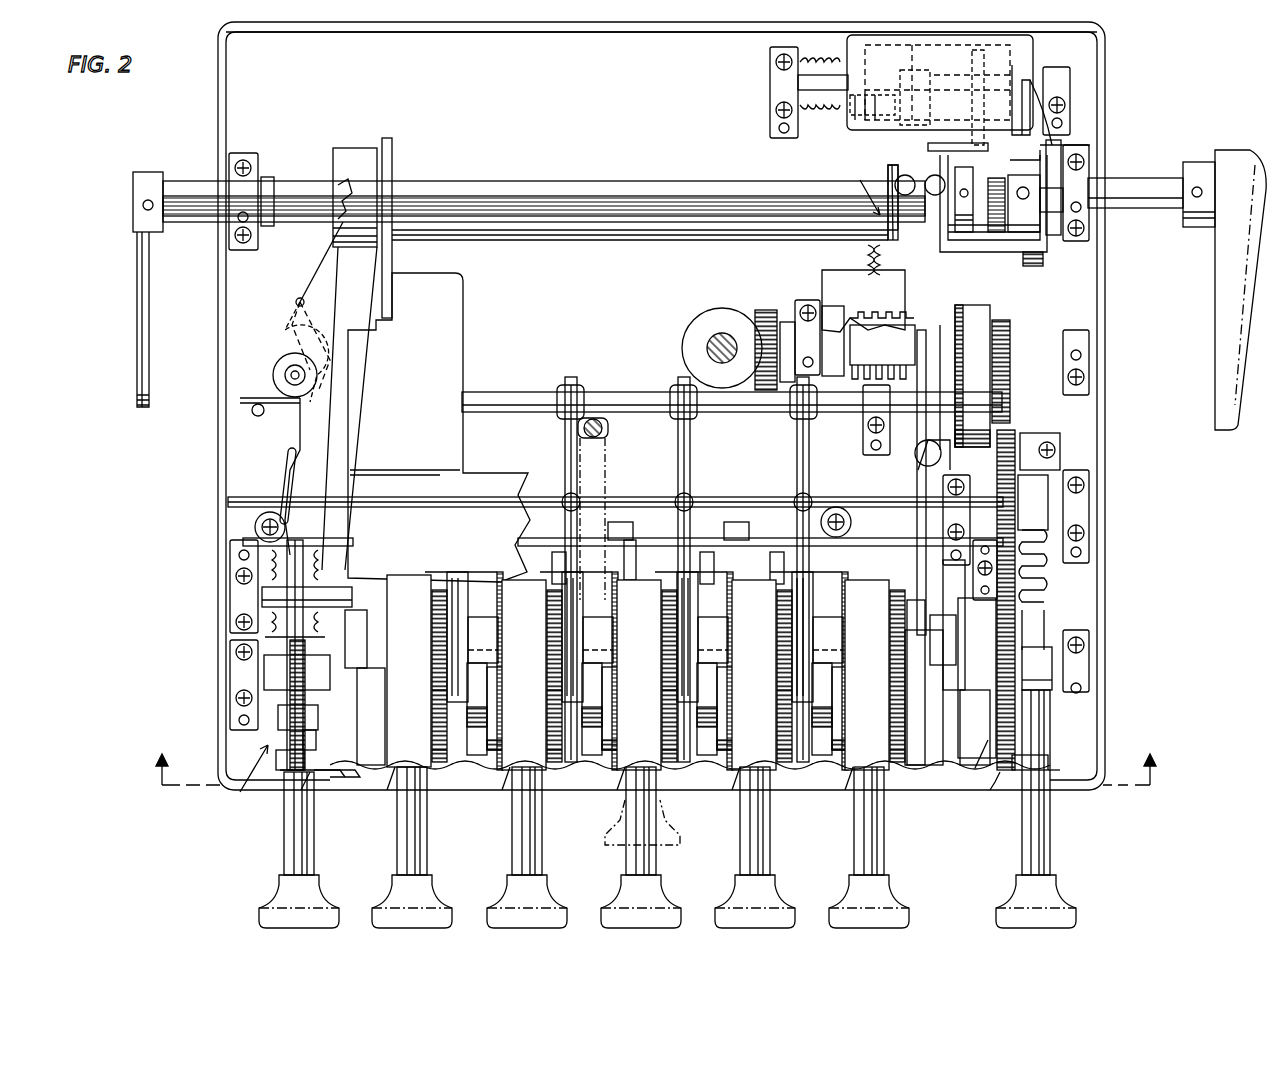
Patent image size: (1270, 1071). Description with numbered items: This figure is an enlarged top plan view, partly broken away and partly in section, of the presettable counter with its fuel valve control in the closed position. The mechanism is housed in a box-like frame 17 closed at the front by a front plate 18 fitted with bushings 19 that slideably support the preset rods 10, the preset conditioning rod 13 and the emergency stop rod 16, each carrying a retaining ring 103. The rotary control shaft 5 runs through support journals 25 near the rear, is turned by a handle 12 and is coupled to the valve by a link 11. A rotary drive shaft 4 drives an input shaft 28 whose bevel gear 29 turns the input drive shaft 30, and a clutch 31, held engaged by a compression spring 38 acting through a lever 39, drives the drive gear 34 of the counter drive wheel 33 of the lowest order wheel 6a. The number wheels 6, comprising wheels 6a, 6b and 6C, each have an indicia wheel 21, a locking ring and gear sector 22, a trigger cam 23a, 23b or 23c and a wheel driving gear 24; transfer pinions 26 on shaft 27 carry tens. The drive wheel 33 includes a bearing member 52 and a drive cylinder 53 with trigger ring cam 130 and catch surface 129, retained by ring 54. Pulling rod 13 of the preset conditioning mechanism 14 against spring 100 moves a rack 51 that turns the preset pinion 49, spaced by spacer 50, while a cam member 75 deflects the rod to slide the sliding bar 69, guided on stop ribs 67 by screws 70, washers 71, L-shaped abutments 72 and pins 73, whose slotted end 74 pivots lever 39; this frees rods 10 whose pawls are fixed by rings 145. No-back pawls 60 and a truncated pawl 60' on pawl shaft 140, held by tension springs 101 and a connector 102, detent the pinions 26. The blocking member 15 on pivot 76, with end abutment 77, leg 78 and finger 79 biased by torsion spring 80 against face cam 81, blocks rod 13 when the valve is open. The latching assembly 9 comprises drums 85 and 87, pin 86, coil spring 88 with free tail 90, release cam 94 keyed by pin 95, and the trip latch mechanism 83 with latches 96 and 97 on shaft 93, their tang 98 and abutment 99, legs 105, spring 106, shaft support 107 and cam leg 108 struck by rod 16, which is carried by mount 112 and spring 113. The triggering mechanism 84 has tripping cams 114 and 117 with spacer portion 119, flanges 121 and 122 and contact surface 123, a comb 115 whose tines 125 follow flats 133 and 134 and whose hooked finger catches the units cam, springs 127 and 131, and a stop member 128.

The rotary drive shaft 4 is at (584, 430).
The rotary control shaft 5 is at (540, 190).
The number wheels 6 is at (654, 752).
The lowest order number wheel 6a is at (845, 790).
The next-to-lowest order number wheel 6b is at (732, 790).
The higher order number wheels 6C is at (387, 790).
The latching assembly 9 is at (1088, 41).
The preset rods 10 is at (527, 855).
The link 11 is at (136, 365).
The handle 12 is at (1245, 262).
The preset conditioning rod 13 is at (285, 850).
The preset conditioning mechanism 14 is at (240, 792).
The blocking member 15 is at (338, 309).
The emergency stop rod 16 is at (1047, 845).
The frame 17 is at (544, 30).
The front plate 18 is at (348, 778).
The bushings 19 is at (312, 780).
The indicia wheel 21 is at (883, 669).
The combined locking ring and transfer gear sector 22 is at (838, 700).
The trigger cam 23a is at (836, 745).
The trigger cam 23b is at (723, 745).
The trigger cam 23c is at (608, 745).
The wheel driving gear 24 is at (452, 768).
The support journals 25 is at (243, 153).
The transfer pinions 26 is at (558, 552).
The transfer pinion shaft 27 is at (345, 590).
The rotary input shaft 28 is at (710, 340).
The bevel gear 29 is at (760, 310).
The input drive shaft 30 is at (862, 325).
The clutch 31 is at (944, 312).
The counter drive wheel 33 is at (980, 770).
The counter drive gear 34 is at (992, 735).
The compression spring 38 is at (852, 300).
The lever 39 is at (943, 450).
The preset conditioning pinion gear 49 is at (290, 663).
The spacer 50 is at (278, 680).
The rack 51 is at (316, 745).
The bearing member 52 is at (1052, 665).
The drive cylinder 53 is at (975, 768).
The retaining ring 54 is at (1052, 680).
The no-back pawls 60 is at (668, 569).
The truncated no-back pawl 60' is at (926, 547).
The stop ribs 67 is at (616, 560).
The sliding bar 69 is at (348, 540).
The upright screws 70 is at (258, 522).
The washers 71 is at (262, 528).
The stop abutments 72 is at (620, 522).
The upright pins 73 is at (232, 568).
The slotted end 74 is at (925, 540).
The cam member 75 is at (284, 478).
The upright pivot 76 is at (290, 372).
The end abutment 77 is at (320, 540).
The upwardly extending leg 78 is at (310, 273).
The cam follower finger 79 is at (338, 185).
The torsion spring 80 is at (273, 377).
The face cam 81 is at (338, 148).
The trip latch mechanism 83 is at (839, 195).
The triggering mechanism 84 is at (860, 180).
The drum 85 is at (1040, 235).
The pin 86 is at (1060, 195).
The friction drum 87 is at (988, 225).
The helical coil spring 88 is at (985, 290).
The free end tail 90 is at (1012, 140).
The trip latch shaft 93 is at (798, 84).
The release cam 94 is at (964, 167).
The pin 95 is at (934, 190).
The first stage knock off trip latch 96 is at (855, 112).
The second stage knock off trip latch 97 is at (925, 118).
The abutment tang 98 is at (1065, 110).
The latch abutment 99 is at (1058, 95).
The compression spring 100 is at (305, 565).
The tension springs 101 is at (562, 495).
The connector 102 is at (854, 460).
The retaining rings 103 is at (306, 765).
The mounting legs 105 is at (1040, 45).
The compression and torsion spring 106 is at (819, 98).
The shaft support 107 is at (770, 72).
The cam leg 108 is at (1040, 150).
The mount 112 is at (1060, 440).
The compression spring 113 is at (1048, 573).
The tripping cam member 114 is at (581, 253).
The comb 115 is at (471, 329).
The tripping cam member 117 is at (980, 252).
The spacer portion 119 is at (648, 256).
The mounting flanges 121 is at (392, 180).
The mounting flanges 122 is at (1090, 180).
The contact surface 123 is at (888, 180).
The tines 125 is at (370, 660).
The tension spring 127 is at (868, 252).
The stop member 128 is at (915, 151).
The catch surface 129 is at (958, 675).
The trigger ring cam 130 is at (945, 700).
The tension spring 131 is at (1045, 265).
The flats 133 is at (610, 690).
The flat 134 is at (725, 690).
The pawl shaft 140 is at (525, 405).
The retaining rings 145 is at (595, 385).